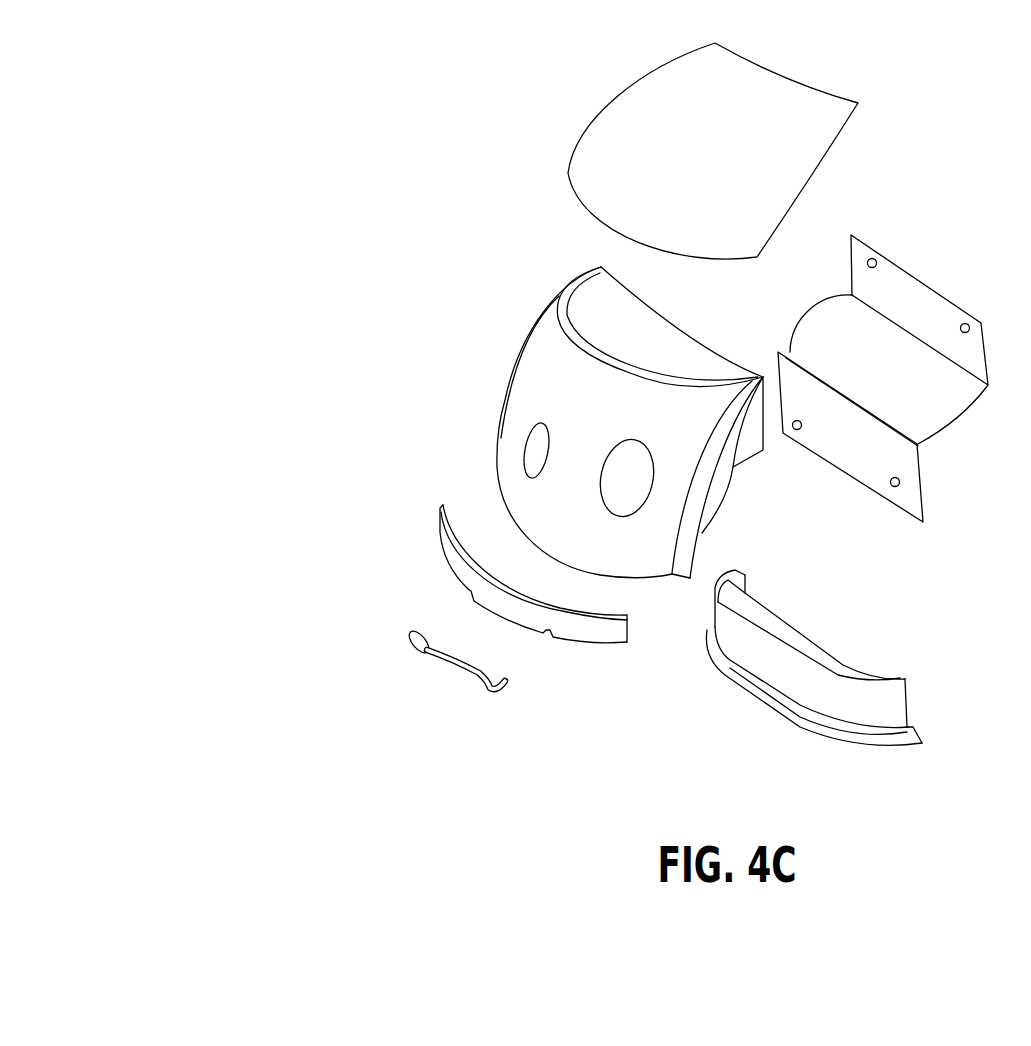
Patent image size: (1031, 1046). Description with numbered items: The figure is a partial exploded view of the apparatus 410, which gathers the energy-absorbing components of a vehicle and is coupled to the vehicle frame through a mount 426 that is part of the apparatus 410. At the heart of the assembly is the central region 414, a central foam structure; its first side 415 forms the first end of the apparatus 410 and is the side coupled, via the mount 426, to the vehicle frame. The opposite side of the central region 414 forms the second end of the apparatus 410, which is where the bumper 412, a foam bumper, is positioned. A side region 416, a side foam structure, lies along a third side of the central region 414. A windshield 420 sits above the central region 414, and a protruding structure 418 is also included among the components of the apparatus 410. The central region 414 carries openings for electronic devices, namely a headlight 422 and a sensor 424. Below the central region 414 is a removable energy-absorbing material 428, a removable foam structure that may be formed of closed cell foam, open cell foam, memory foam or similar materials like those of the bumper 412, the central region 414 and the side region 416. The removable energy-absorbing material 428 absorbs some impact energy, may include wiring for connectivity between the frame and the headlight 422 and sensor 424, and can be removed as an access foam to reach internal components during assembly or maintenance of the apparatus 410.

The apparatus 410 is at (188, 87).
The bumper 412 is at (447, 565).
The central region 414 is at (630, 422).
The first side 415 is at (692, 338).
The side region 416 is at (706, 527).
The protruding structure 418 is at (432, 655).
The windshield 420 is at (747, 149).
The headlight 422 is at (637, 442).
The sensor 424 is at (540, 468).
The mount 426 is at (830, 303).
The removable energy-absorbing material 428 is at (900, 677).